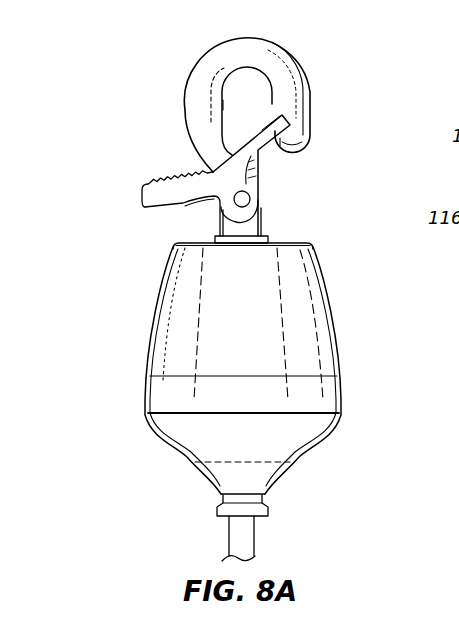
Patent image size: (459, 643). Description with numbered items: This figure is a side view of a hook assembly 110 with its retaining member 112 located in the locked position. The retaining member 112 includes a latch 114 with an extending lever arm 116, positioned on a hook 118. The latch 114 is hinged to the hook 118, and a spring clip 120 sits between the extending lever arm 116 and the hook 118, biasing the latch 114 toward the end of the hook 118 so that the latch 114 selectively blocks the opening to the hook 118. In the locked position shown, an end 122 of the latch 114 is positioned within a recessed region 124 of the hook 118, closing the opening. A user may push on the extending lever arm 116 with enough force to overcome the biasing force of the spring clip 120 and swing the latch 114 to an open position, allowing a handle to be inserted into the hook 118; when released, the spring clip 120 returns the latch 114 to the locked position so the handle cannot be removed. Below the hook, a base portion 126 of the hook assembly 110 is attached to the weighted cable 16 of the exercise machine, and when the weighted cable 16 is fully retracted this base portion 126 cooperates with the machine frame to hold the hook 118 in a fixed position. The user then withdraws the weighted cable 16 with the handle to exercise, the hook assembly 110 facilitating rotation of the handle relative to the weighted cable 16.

The hook assembly 110 is at (103, 102).
The retaining member 112 is at (263, 160).
The latch 114 is at (275, 140).
The extending lever arm 116 is at (162, 172).
The hook 118 is at (273, 53).
The spring clip 120 is at (220, 210).
The end 122 is at (290, 102).
The recessed region 124 is at (263, 108).
The base portion 126 is at (305, 356).
The weighted cable 16 is at (250, 534).